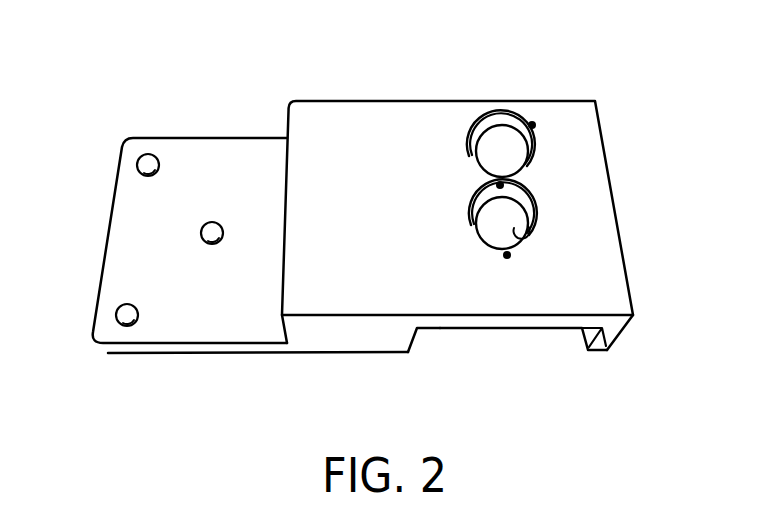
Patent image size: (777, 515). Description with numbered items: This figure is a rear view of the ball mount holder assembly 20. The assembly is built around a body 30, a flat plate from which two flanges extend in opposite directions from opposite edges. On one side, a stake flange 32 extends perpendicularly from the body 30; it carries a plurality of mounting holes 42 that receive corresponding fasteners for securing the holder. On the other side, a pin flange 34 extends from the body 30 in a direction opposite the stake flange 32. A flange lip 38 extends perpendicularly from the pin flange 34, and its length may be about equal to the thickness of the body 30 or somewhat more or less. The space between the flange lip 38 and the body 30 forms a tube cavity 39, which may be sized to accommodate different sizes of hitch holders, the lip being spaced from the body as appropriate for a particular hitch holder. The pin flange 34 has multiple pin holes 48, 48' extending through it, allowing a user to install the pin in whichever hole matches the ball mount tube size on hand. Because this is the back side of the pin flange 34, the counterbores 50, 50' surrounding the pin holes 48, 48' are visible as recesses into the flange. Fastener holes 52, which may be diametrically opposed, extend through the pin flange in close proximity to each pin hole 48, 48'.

The ball mount holder assembly 20 is at (398, 66).
The body 30 is at (345, 335).
The stake flange 32 is at (157, 348).
The pin flange 34 is at (533, 322).
The flange lip 38 is at (608, 343).
The tube cavity 39 is at (459, 347).
The mounting holes 42 is at (127, 320).
The pin hole 48 is at (580, 226).
The pin hole 48' is at (567, 107).
The counterbore 50 is at (579, 196).
The counterbore 50' is at (577, 119).
The fastener holes 52 is at (505, 184).